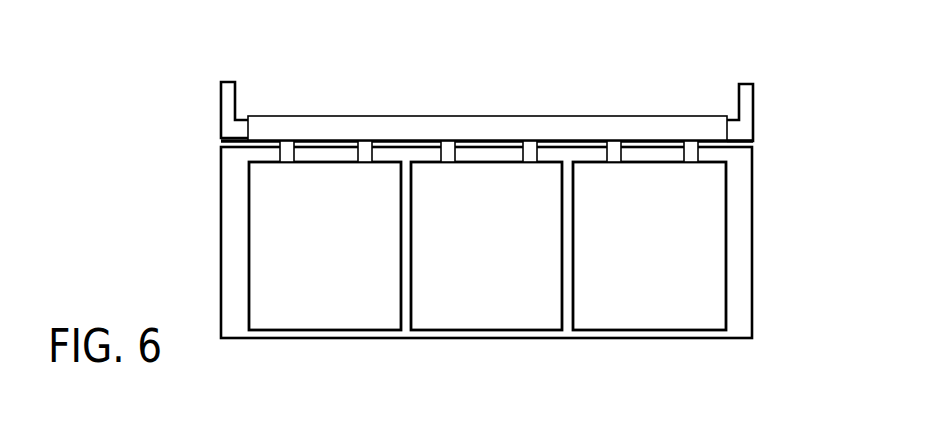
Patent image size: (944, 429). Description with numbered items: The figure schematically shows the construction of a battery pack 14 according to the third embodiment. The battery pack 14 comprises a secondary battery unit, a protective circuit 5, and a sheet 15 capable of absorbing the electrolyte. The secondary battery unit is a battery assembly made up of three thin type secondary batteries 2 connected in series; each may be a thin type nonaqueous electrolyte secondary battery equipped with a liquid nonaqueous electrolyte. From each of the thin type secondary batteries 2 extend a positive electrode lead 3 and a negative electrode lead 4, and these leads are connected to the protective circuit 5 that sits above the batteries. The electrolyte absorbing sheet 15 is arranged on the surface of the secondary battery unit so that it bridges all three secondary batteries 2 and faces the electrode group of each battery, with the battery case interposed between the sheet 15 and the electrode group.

The thin type secondary battery 2 is at (322, 320).
The positive electrode lead 3 is at (367, 147).
The negative electrode lead 4 is at (288, 147).
The protective circuit 5 is at (642, 131).
The battery pack 14 is at (485, 85).
The electrolyte absorbing sheet 15 is at (232, 240).